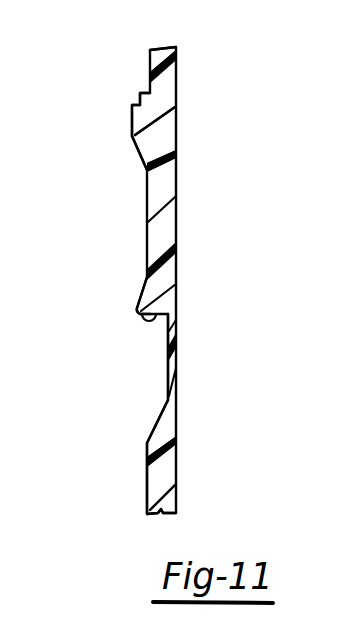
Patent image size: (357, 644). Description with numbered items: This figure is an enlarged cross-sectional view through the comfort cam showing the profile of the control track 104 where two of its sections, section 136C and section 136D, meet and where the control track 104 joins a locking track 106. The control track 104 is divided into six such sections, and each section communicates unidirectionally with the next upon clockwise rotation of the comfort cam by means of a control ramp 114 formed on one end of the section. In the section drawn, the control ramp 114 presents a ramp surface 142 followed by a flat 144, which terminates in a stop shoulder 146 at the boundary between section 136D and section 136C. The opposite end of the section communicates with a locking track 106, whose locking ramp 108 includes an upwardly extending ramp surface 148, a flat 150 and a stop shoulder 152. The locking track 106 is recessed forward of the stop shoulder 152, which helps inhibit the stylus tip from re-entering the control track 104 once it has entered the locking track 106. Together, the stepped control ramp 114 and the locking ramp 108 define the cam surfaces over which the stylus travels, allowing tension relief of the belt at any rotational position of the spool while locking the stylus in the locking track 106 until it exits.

The section 136D is at (142, 59).
The stop shoulder 146 is at (139, 96).
The flat 144 is at (133, 108).
The control ramp 114 is at (124, 137).
The ramp surface 142 is at (134, 140).
The section 136C is at (137, 185).
The control track 104 is at (135, 223).
The locking ramp 108 is at (121, 292).
The ramp surface 148 is at (134, 299).
The flat 150 is at (138, 316).
The stop shoulder 152 is at (162, 313).
The locking track 106 is at (130, 404).